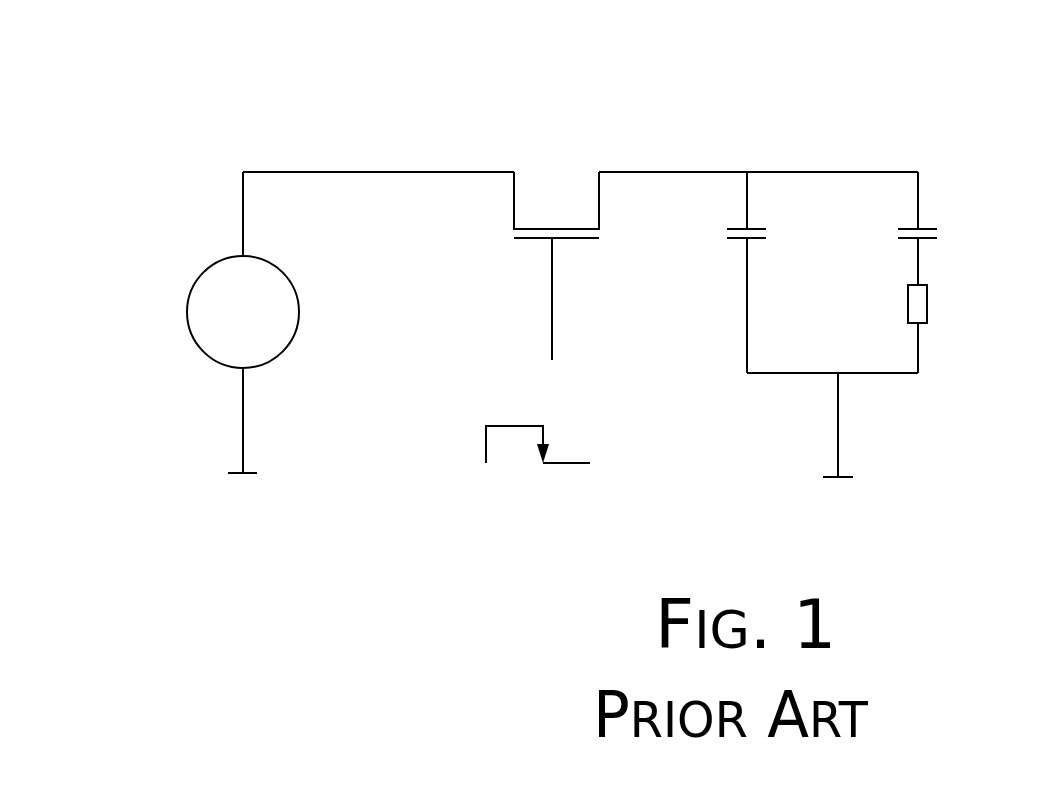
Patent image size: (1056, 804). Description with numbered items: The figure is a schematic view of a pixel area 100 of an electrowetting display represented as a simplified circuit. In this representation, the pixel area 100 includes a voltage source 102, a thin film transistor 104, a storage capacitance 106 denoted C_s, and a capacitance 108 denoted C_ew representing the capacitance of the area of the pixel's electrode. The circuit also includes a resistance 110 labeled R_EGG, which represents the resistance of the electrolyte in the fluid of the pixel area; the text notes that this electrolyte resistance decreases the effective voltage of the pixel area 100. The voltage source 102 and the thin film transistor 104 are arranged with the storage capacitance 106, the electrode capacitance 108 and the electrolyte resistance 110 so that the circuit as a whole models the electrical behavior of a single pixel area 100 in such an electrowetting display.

The pixel area 100 is at (918, 107).
The voltage source 102 is at (243, 322).
The thin film transistor 104 is at (483, 482).
The storage capacitance 106 is at (725, 257).
The capacitance of the area of the pixel's electrode 108 is at (947, 238).
The electrowetting resistor REGG 110 is at (932, 318).